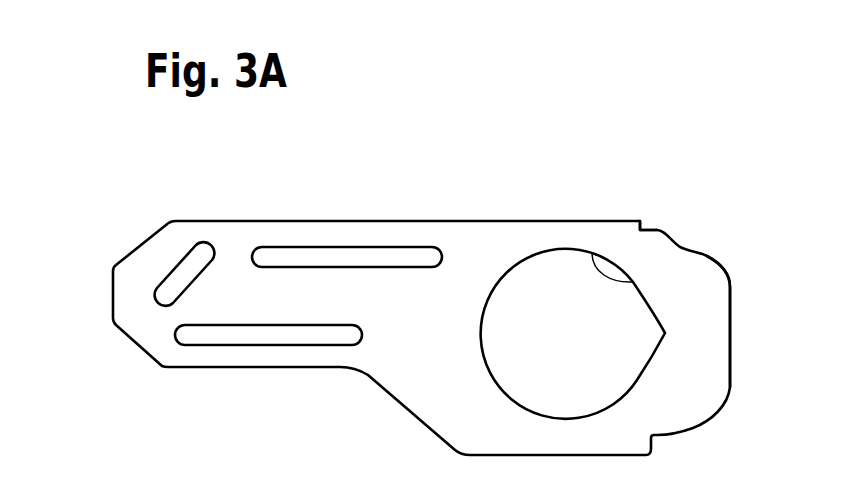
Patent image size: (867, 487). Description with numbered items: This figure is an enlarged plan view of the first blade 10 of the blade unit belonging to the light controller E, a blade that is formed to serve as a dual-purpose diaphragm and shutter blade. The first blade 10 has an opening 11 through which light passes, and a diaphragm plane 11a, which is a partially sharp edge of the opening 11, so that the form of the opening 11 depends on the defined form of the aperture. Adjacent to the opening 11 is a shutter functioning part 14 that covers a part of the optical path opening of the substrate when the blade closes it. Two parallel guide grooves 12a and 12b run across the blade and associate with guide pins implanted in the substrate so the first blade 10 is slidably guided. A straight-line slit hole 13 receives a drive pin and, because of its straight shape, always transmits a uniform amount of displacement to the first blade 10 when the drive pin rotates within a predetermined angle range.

The first blade 10 is at (127, 247).
The opening 11 is at (511, 272).
The diaphragm plane 11a is at (592, 253).
The guide groove 12a is at (254, 254).
The guide groove 12b is at (188, 337).
The slit hole 13 is at (178, 277).
The shutter functioning part 14 is at (713, 292).
The light controller E is at (643, 220).